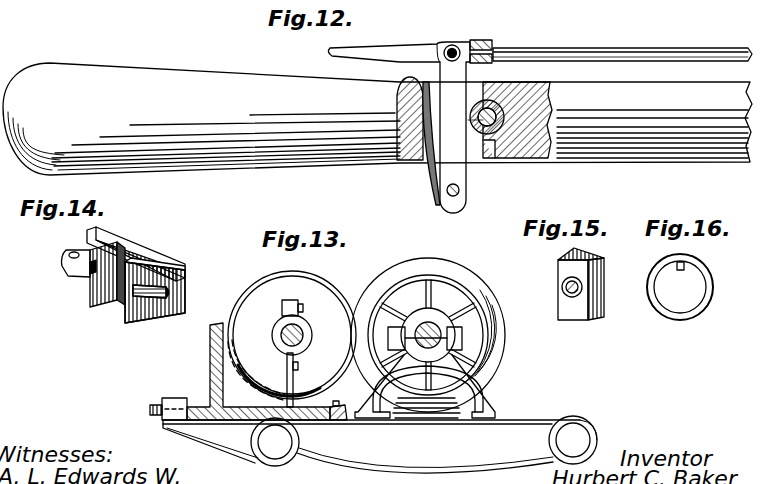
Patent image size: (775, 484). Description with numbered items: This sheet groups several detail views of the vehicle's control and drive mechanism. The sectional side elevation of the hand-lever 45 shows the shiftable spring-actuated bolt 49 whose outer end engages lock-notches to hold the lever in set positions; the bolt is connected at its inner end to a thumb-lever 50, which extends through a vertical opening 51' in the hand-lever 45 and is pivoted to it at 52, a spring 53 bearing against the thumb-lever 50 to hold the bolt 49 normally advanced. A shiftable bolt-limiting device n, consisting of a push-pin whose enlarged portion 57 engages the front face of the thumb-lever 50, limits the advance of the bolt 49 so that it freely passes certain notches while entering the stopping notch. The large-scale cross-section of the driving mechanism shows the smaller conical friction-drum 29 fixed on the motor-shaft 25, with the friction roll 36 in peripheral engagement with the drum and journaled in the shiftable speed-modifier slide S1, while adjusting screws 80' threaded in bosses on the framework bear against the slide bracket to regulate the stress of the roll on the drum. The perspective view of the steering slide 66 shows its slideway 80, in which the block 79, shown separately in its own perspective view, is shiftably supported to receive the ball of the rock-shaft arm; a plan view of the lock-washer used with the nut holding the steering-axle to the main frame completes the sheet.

In FIG. 12, the hand-lever 45 is at (377, 119).
In FIG. 12, the spring-actuated bolt 49 is at (655, 48).
In FIG. 12, the thumb-lever 50 is at (412, 50).
In FIG. 12, the vertical opening 51' is at (494, 154).
In FIG. 12, the pivot 52 is at (450, 196).
In FIG. 12, the spring 53 is at (432, 126).
In FIG. 12, the enlarged portion of push-pin 57 is at (503, 88).
In FIG. 12, the shiftable bolt-limiting device n is at (499, 119).
In FIG. 14, the slide 66 is at (148, 252).
In FIG. 14, the slideway 80 is at (76, 286).
In FIG. 13, the adjusting screws 80' is at (233, 371).
In FIG. 13, the friction roll 36 is at (326, 280).
In FIG. 13, the slide S1 is at (313, 338).
In FIG. 13, the conical friction-drum 29 is at (470, 273).
In FIG. 13, the motor-shaft 25 is at (430, 322).
In FIG. 15, the block 79 is at (577, 306).